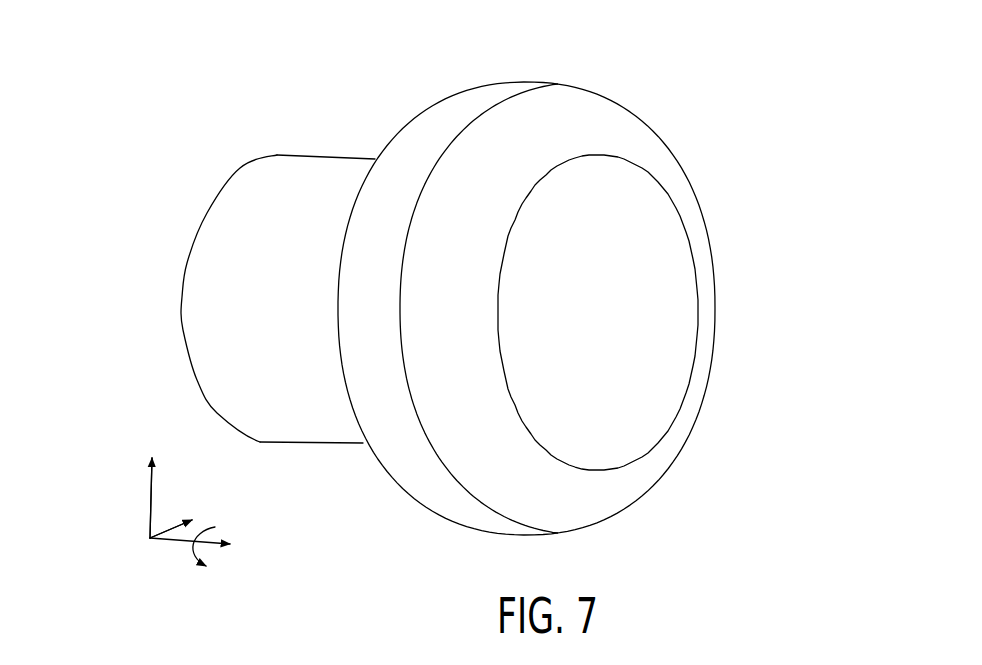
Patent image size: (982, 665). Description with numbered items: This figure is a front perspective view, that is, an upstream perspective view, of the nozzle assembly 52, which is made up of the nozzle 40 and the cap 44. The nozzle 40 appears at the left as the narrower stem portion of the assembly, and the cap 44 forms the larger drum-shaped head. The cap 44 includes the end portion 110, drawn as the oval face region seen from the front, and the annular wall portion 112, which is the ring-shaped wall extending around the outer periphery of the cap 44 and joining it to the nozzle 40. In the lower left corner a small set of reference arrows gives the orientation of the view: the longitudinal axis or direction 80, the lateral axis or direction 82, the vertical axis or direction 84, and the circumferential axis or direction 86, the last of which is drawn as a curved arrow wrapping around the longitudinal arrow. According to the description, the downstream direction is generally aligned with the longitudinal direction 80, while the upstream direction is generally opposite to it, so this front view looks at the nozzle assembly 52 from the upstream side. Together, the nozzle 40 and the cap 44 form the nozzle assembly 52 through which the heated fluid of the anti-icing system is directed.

The nozzle assembly 52 is at (395, 50).
The annular wall portion 112 is at (490, 88).
The cap 44 is at (602, 118).
The end portion 110 is at (653, 295).
The nozzle 40 is at (252, 180).
The longitudinal axis or direction 80 is at (170, 540).
The lateral axis or direction 82 is at (166, 525).
The vertical axis or direction 84 is at (148, 505).
The circumferential axis or direction 86 is at (210, 518).